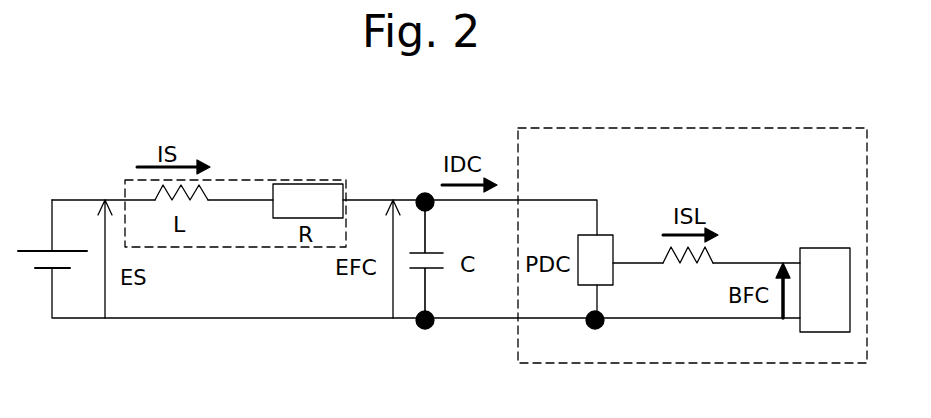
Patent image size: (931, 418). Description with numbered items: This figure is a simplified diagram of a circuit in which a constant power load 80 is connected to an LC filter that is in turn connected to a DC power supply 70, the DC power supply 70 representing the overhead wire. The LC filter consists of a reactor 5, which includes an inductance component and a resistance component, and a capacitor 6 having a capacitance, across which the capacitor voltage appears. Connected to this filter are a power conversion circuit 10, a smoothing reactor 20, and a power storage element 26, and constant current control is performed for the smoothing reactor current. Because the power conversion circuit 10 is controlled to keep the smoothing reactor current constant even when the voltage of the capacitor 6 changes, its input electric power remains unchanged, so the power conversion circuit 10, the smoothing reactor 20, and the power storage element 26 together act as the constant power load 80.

The DC power supply 70 is at (33, 248).
The reactor 5 is at (258, 178).
The capacitor 6 is at (430, 273).
The constant power load 80 is at (643, 128).
The power conversion circuit 10 is at (607, 233).
The smoothing reactor 20 is at (688, 268).
The power storage element 26 is at (813, 248).